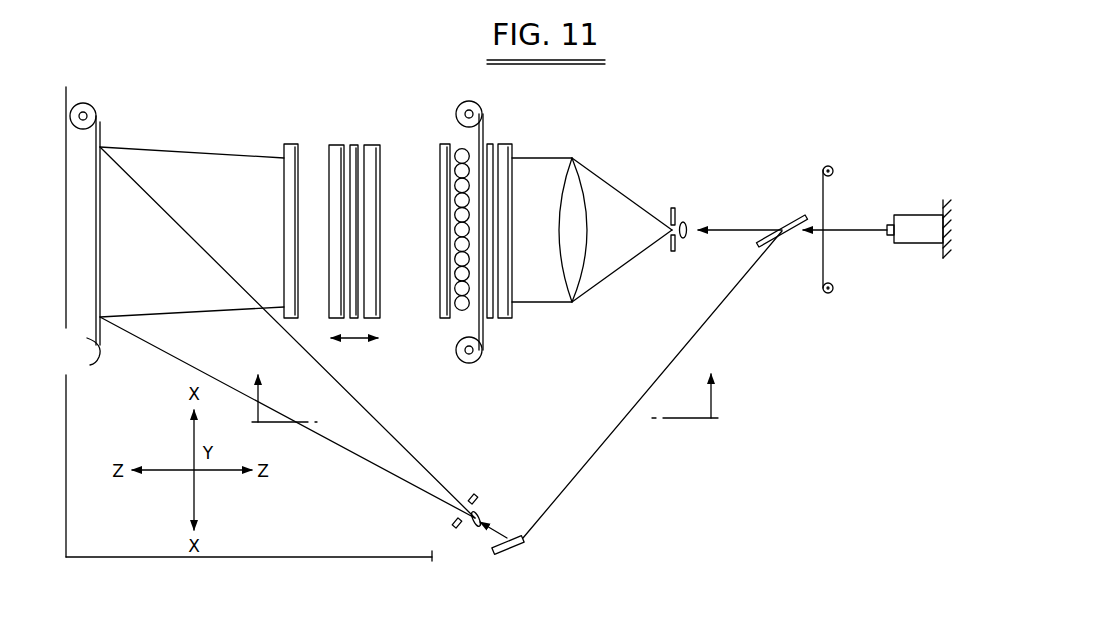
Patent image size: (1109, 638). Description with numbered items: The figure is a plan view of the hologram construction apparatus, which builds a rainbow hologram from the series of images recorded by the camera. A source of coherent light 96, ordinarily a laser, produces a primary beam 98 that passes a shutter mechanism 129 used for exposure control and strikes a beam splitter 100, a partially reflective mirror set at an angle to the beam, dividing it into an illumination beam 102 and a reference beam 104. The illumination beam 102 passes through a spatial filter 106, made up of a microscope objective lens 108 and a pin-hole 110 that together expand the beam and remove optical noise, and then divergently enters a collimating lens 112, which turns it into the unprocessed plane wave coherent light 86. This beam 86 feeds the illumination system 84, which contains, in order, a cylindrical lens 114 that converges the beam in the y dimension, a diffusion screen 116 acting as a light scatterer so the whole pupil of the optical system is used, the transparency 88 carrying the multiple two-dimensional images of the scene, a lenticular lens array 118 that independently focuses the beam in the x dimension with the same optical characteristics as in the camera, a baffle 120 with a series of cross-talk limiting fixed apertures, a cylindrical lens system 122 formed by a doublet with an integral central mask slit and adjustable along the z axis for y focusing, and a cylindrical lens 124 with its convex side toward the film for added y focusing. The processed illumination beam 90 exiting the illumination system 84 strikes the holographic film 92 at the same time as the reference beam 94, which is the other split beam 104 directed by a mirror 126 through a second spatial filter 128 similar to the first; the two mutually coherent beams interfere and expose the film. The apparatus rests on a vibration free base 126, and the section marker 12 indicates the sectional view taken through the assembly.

The section line 12- 12 is at (485, 385).
The illumination system 84 is at (515, 100).
The plane wave coherent light 86 is at (540, 163).
The transparency 88 is at (483, 333).
The processed illumination beam 90 is at (166, 160).
The holographic film 92 is at (103, 252).
The reference beam 94 is at (177, 343).
The source of coherent light 96 is at (916, 215).
The primary beam 98 is at (840, 228).
The beam splitter 100 is at (788, 215).
The illumination beam 102 is at (735, 228).
The reference beam 104 is at (712, 313).
The spatial filter 106 is at (687, 196).
The microscope objective lens 108 is at (689, 234).
The pin-hole 110 is at (673, 252).
The collimating lens 112 is at (576, 158).
The cylindrical lens 114 is at (508, 322).
The diffusion screen 116 is at (497, 142).
The lenticular lens array 118 is at (457, 314).
The baffle 120 is at (443, 143).
The cylindrical lens system 122 is at (380, 134).
The cylindrical lens 124 is at (287, 143).
The mirror 126 is at (66, 530).
The spatial filter 128 is at (489, 499).
The shutter mechanism 129 is at (833, 165).